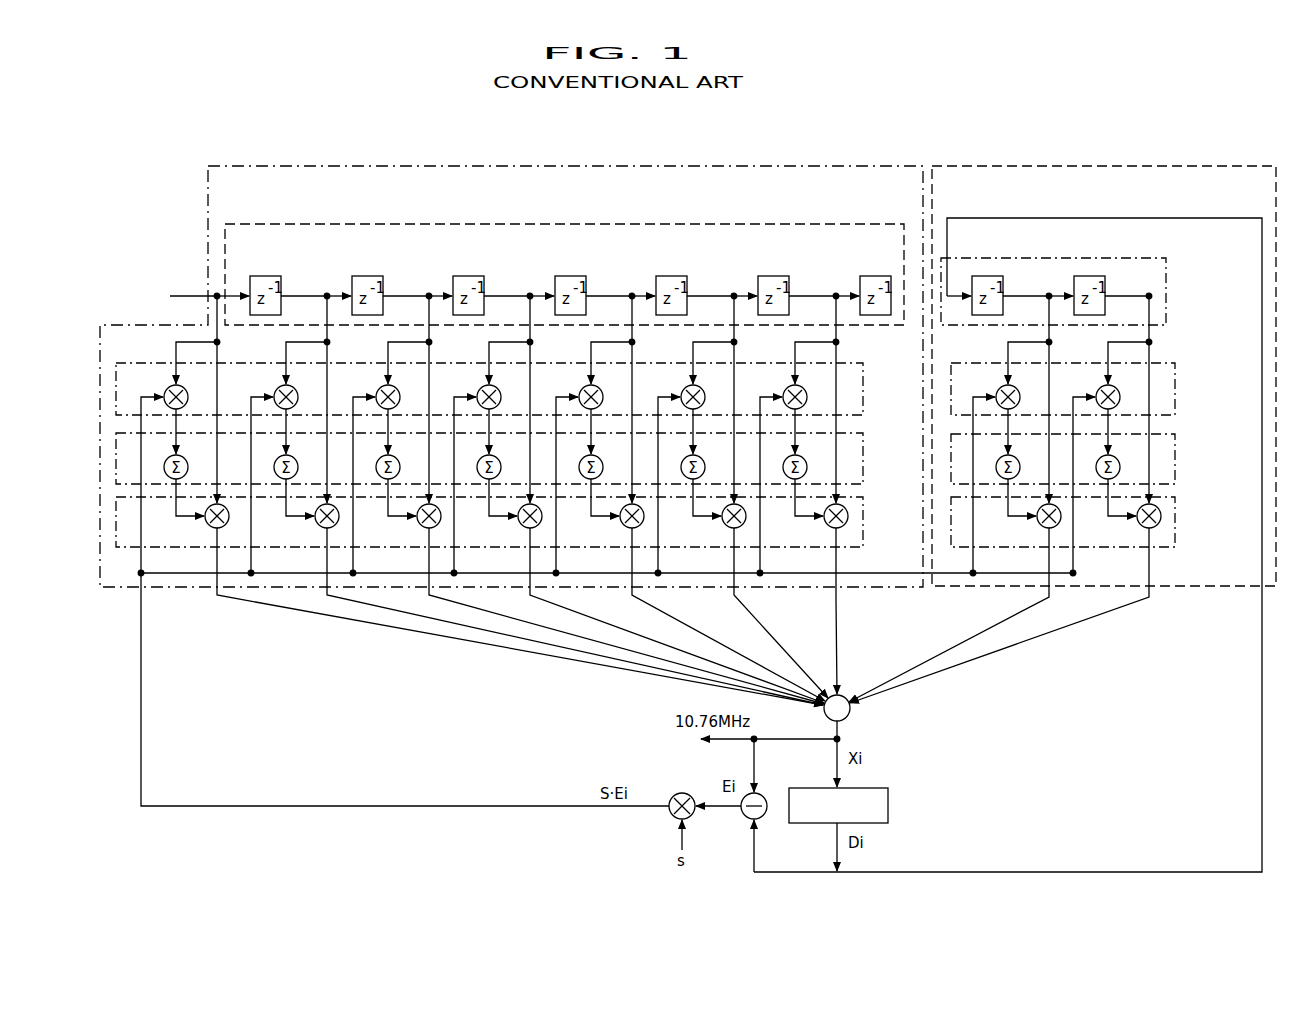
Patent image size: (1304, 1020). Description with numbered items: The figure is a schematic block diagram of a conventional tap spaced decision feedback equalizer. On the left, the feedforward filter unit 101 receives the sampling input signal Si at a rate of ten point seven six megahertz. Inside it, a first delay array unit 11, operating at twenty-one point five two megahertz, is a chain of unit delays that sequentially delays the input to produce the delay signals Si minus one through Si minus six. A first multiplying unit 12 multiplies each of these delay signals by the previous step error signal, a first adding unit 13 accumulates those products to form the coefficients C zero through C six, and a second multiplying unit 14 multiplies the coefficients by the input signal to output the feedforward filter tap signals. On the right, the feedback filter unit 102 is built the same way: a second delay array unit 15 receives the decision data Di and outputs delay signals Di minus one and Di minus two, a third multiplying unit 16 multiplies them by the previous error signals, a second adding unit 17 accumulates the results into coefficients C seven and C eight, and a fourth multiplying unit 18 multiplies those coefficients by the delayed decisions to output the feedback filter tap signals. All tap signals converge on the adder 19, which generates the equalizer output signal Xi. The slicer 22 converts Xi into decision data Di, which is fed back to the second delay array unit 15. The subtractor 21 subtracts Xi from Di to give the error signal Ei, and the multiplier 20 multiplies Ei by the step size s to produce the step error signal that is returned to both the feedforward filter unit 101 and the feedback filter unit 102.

The feedforward filter unit 101 is at (608, 166).
The feedback filter unit 102 is at (1048, 166).
The first delay array unit 11 is at (795, 224).
The first multiplying unit 12 is at (865, 390).
The first adding unit 13 is at (865, 457).
The second multiplying unit 14 is at (865, 520).
The second delay array unit 15 is at (1175, 291).
The third multiplying unit 16 is at (1178, 388).
The second adding unit 17 is at (1178, 457).
The fourth multiplying unit 18 is at (1178, 521).
The adder 19 is at (851, 708).
The multiplier 20 is at (676, 796).
The subtractor 21 is at (745, 819).
The slicer 22 is at (890, 806).